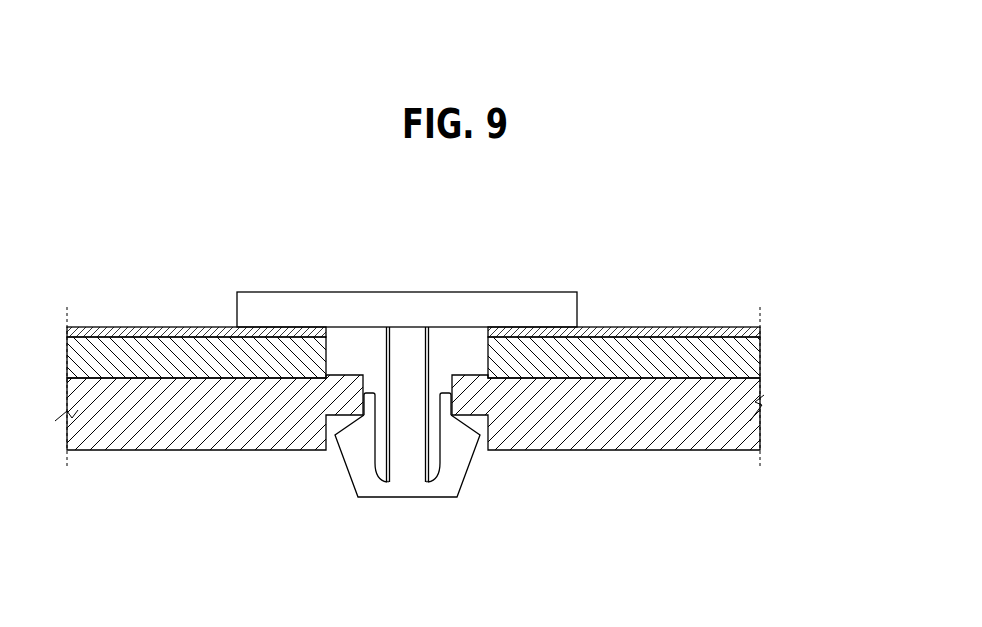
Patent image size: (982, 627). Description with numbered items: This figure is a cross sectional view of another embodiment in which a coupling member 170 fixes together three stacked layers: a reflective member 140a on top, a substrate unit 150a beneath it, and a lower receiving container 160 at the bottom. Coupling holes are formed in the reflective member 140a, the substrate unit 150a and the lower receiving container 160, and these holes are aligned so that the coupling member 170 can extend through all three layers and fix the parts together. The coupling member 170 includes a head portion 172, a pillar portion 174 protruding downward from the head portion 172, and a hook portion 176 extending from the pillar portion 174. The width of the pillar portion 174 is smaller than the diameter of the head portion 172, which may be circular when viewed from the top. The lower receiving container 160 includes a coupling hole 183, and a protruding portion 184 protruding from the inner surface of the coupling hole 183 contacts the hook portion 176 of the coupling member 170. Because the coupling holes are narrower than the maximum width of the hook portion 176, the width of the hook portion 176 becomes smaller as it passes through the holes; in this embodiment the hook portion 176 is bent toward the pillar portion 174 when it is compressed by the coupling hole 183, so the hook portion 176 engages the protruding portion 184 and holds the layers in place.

The reflective member 140a is at (758, 334).
The substrate unit 150a is at (758, 369).
The lower receiving container 160 is at (760, 401).
The coupling member 170 is at (594, 277).
The head portion 172 is at (530, 302).
The pillar portion 174 is at (403, 357).
The hook portion 176 is at (353, 470).
The coupling hole 183 is at (478, 432).
The protruding portion 184 is at (342, 392).